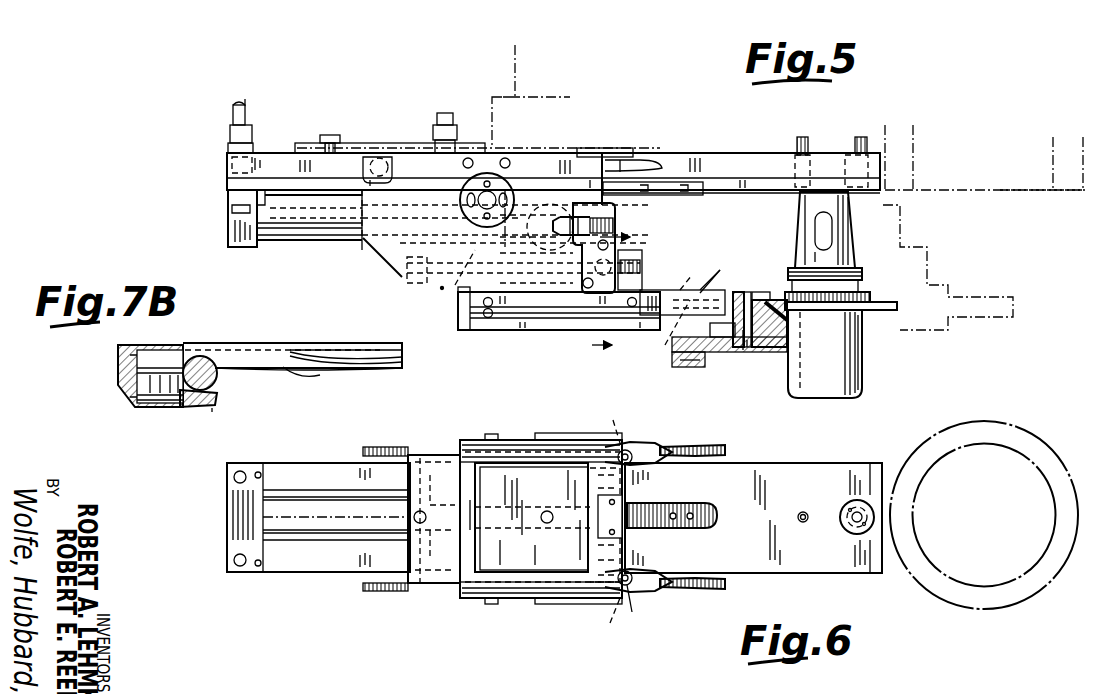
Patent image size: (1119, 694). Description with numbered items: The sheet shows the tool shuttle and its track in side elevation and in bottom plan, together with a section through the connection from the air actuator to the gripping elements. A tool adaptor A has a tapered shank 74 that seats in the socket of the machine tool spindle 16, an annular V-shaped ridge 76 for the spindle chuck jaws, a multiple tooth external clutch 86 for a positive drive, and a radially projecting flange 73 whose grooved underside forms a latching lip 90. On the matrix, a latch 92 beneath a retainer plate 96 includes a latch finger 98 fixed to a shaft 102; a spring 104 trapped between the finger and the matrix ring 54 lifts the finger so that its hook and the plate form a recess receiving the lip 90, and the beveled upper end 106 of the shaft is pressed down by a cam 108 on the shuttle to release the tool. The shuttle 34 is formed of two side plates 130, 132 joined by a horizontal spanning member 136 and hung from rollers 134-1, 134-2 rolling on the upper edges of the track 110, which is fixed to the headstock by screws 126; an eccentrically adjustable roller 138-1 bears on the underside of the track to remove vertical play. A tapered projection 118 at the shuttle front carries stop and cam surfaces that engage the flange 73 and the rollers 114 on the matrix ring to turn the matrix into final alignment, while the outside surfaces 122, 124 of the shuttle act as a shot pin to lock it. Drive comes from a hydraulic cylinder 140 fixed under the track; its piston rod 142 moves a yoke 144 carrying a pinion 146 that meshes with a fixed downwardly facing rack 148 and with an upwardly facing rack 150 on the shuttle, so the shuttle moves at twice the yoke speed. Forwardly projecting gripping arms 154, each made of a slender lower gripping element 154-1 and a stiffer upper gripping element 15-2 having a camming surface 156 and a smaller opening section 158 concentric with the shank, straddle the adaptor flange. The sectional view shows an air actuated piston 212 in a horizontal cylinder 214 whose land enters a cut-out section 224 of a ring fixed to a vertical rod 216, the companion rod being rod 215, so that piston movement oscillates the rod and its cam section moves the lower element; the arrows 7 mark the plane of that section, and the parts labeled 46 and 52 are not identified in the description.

In FIG. 5, the machine tool spindle 16 is at (1020, 193).
In FIG. 5, the tool transfer shuttle 34 is at (375, 253).
In FIG. 6, the tool transfer shuttle 34 is at (458, 594).
In FIG. 5, the tool gripper 46 is at (697, 363).
In FIG. 5, the gripper pin 52 is at (670, 363).
In FIG. 5, the matrix ring 54 is at (713, 352).
In FIG. 5, the flange 73 is at (887, 313).
In FIG. 5, the tapered shank 74 is at (852, 210).
In FIG. 5, the annular V-shaped ridge 76 is at (867, 273).
In FIG. 5, the external clutch 86 is at (870, 290).
In FIG. 5, the latching lip 90 is at (747, 347).
In FIG. 5, the latch 92 is at (747, 290).
In FIG. 5, the retainer plate 96 is at (816, 254).
In FIG. 5, the latch finger 98 is at (780, 302).
In FIG. 5, the latch shaft 102 is at (743, 350).
In FIG. 5, the spring 104 is at (728, 343).
In FIG. 5, the upper end of latch shaft 106 is at (740, 303).
In FIG. 5, the cam 108 is at (645, 270).
In FIG. 5, the track 110 is at (726, 185).
In FIG. 6, the track 110 is at (740, 463).
In FIG. 5, the rollers 114 is at (710, 330).
In FIG. 5, the tapered projection 118 is at (658, 294).
In FIG. 5, the outside surface of shuttle 122 is at (540, 325).
In FIG. 6, the outside surface of shuttle 122 is at (533, 435).
In FIG. 6, the outside surface of shuttle 124 is at (537, 592).
In FIG. 5, the screws 126 is at (858, 142).
In FIG. 6, the screws 126 is at (853, 523).
In FIG. 5, the side plate 130 is at (383, 270).
In FIG. 6, the side plate 130 is at (437, 452).
In FIG. 6, the side plate 132 is at (420, 587).
In FIG. 5, the roller 134-1 is at (367, 146).
In FIG. 5, the roller 134-2 is at (578, 148).
In FIG. 5, the horizontal member 136 is at (395, 277).
In FIG. 6, the horizontal member 136 is at (407, 478).
In FIG. 5, the roller 138-1 is at (500, 148).
In FIG. 5, the hydraulic cylinder 140 is at (292, 242).
In FIG. 6, the hydraulic cylinder 140 is at (307, 543).
In FIG. 5, the piston rod 142 is at (333, 242).
In FIG. 5, the driving yoke 144 is at (473, 238).
In FIG. 5, the pinion gear 146 is at (455, 285).
In FIG. 5, the rack 148 is at (660, 177).
In FIG. 6, the rack 148 is at (707, 513).
In FIG. 5, the shuttle rack 150 is at (440, 287).
In FIG. 6, the shuttle rack 150 is at (568, 508).
In FIG. 5, the gripping arm 154 is at (730, 288).
In FIG. 7B, the gripping arm 154 is at (278, 340).
In FIG. 6, the gripping arm 154 is at (703, 442).
In FIG. 7B, the lower gripping element 154-1 is at (292, 342).
In FIG. 7B, the upper gripping element 15-2 is at (287, 367).
In FIG. 7B, the camming surface 156 is at (393, 370).
In FIG. 5, the smaller opening section 158 is at (660, 366).
In FIG. 7B, the air actuated piston 212 is at (153, 403).
In FIG. 5, the horizontal cylinder 214 is at (635, 244).
In FIG. 7B, the horizontal cylinder 214 is at (130, 385).
In FIG. 6, the vertical rod 215 is at (643, 608).
In FIG. 5, the vertical rod 216 is at (545, 226).
In FIG. 7B, the vertical rod 216 is at (228, 404).
In FIG. 6, the vertical rod 216 is at (644, 502).
In FIG. 7B, the cut-out section 224 is at (132, 365).
In FIG. 5, the section line 7 is at (624, 289).
In FIG. 5, the tool adaptor A is at (873, 352).